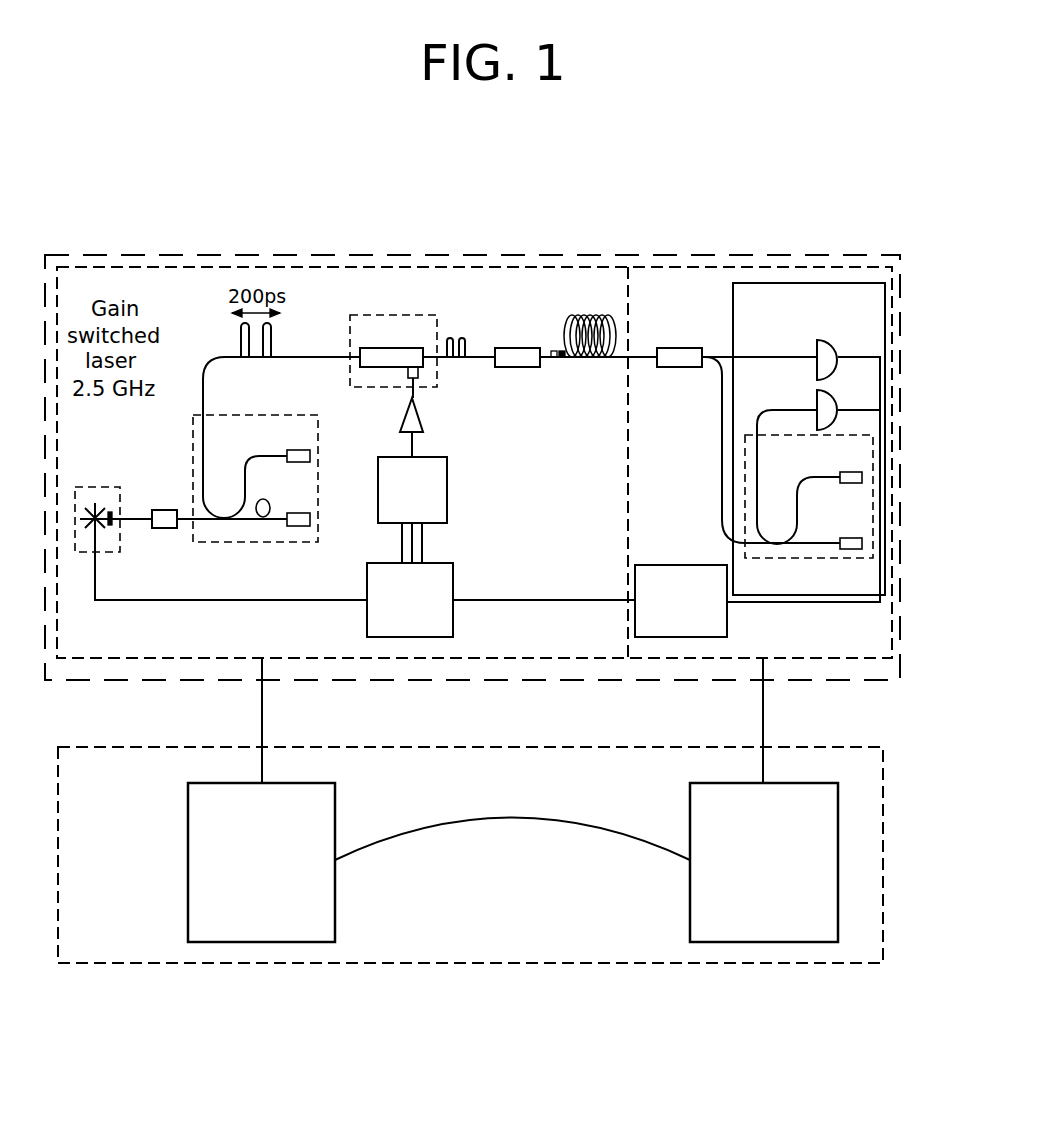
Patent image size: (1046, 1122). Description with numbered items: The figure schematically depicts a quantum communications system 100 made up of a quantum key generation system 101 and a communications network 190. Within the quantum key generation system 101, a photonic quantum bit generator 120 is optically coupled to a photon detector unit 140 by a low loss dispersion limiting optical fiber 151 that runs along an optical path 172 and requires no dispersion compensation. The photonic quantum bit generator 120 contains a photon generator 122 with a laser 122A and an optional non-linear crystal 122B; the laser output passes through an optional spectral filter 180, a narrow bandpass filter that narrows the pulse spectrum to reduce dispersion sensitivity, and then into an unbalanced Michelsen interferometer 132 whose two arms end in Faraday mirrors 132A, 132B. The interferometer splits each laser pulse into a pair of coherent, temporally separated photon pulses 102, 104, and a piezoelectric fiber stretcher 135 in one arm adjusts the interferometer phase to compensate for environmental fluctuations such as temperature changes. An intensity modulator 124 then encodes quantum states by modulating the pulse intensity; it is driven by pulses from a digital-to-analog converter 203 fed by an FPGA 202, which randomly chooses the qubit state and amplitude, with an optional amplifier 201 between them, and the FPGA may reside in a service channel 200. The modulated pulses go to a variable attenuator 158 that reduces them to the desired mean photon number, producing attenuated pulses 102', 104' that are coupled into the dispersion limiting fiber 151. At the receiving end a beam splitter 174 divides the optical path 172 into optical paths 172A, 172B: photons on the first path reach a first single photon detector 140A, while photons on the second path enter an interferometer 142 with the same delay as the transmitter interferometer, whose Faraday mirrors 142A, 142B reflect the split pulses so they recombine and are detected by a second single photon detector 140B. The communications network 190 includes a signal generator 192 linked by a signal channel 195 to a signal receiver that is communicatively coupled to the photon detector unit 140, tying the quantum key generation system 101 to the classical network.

The quantum communications system 100 is at (737, 200).
The quantum key generation system 101 is at (775, 251).
The photonic quantum bit generator 120 is at (115, 272).
The photon pulse 102 is at (211, 340).
The photon pulse 104 is at (294, 330).
The attenuated photon pulse 102' is at (431, 283).
The attenuated photon pulse 104' is at (492, 283).
The intensity modulator 124 is at (378, 305).
The Michelsen interferometer 132 is at (222, 415).
The Faraday mirror 132A is at (310, 456).
The Faraday mirror 132B is at (310, 519).
The piezoelectric fiber stretcher 135 is at (265, 517).
The photon generator 122 is at (76, 555).
The laser 122A is at (93, 506).
The non-linear crystal 122B is at (112, 522).
The spectral filter 180 is at (165, 528).
The amplifier 201 is at (425, 412).
The digital-to-analog converter 203 is at (448, 506).
The FPGA 202 is at (453, 624).
The service channel 200 is at (548, 600).
The attenuator 158 is at (525, 368).
The dispersion limiting optical fiber 151 is at (557, 365).
The optical path 172 is at (475, 356).
The beam splitter 174 is at (680, 367).
The optical path 172A is at (725, 352).
The optical path 172B is at (722, 410).
The photon detector unit 140 is at (855, 283).
The first photon detector 140A is at (840, 350).
The second photon detector 140B is at (840, 403).
The interferometer 142 is at (852, 435).
The Faraday mirror 142A is at (840, 477).
The Faraday mirror 142B is at (850, 550).
The communications network 190 is at (828, 747).
The signal generator 192 is at (513, 862).
The signal channel 195 is at (512, 827).